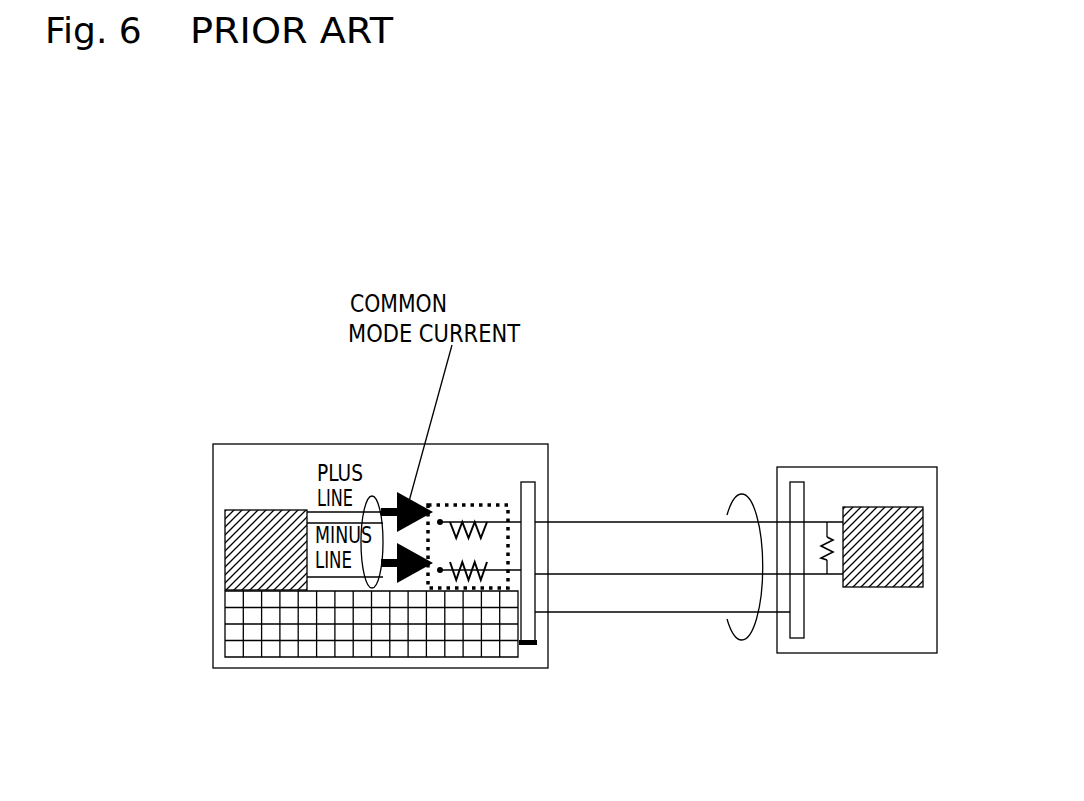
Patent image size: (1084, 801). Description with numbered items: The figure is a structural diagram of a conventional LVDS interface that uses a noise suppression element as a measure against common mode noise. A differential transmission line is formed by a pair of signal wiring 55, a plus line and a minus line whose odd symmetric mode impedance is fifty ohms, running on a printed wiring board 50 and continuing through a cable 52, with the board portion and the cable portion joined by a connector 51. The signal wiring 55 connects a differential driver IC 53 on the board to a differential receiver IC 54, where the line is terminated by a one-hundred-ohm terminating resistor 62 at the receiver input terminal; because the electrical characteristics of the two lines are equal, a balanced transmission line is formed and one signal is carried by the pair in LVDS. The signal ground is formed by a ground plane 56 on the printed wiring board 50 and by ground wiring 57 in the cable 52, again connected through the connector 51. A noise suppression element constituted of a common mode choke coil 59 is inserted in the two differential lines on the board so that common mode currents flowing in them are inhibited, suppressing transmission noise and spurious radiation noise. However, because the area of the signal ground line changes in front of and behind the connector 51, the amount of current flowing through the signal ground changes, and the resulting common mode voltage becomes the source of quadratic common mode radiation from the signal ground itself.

The printed wiring board 50 is at (495, 443).
The connector 51 is at (533, 482).
The cable 52 is at (727, 503).
The differential driver IC 53 is at (235, 510).
The differential receiver IC 54 is at (867, 507).
The signal wiring 55 is at (372, 500).
The ground plane 56 is at (253, 657).
The ground wiring 57 is at (685, 615).
The common mode choke coil 59 is at (493, 565).
The terminating resistor 62 is at (825, 522).